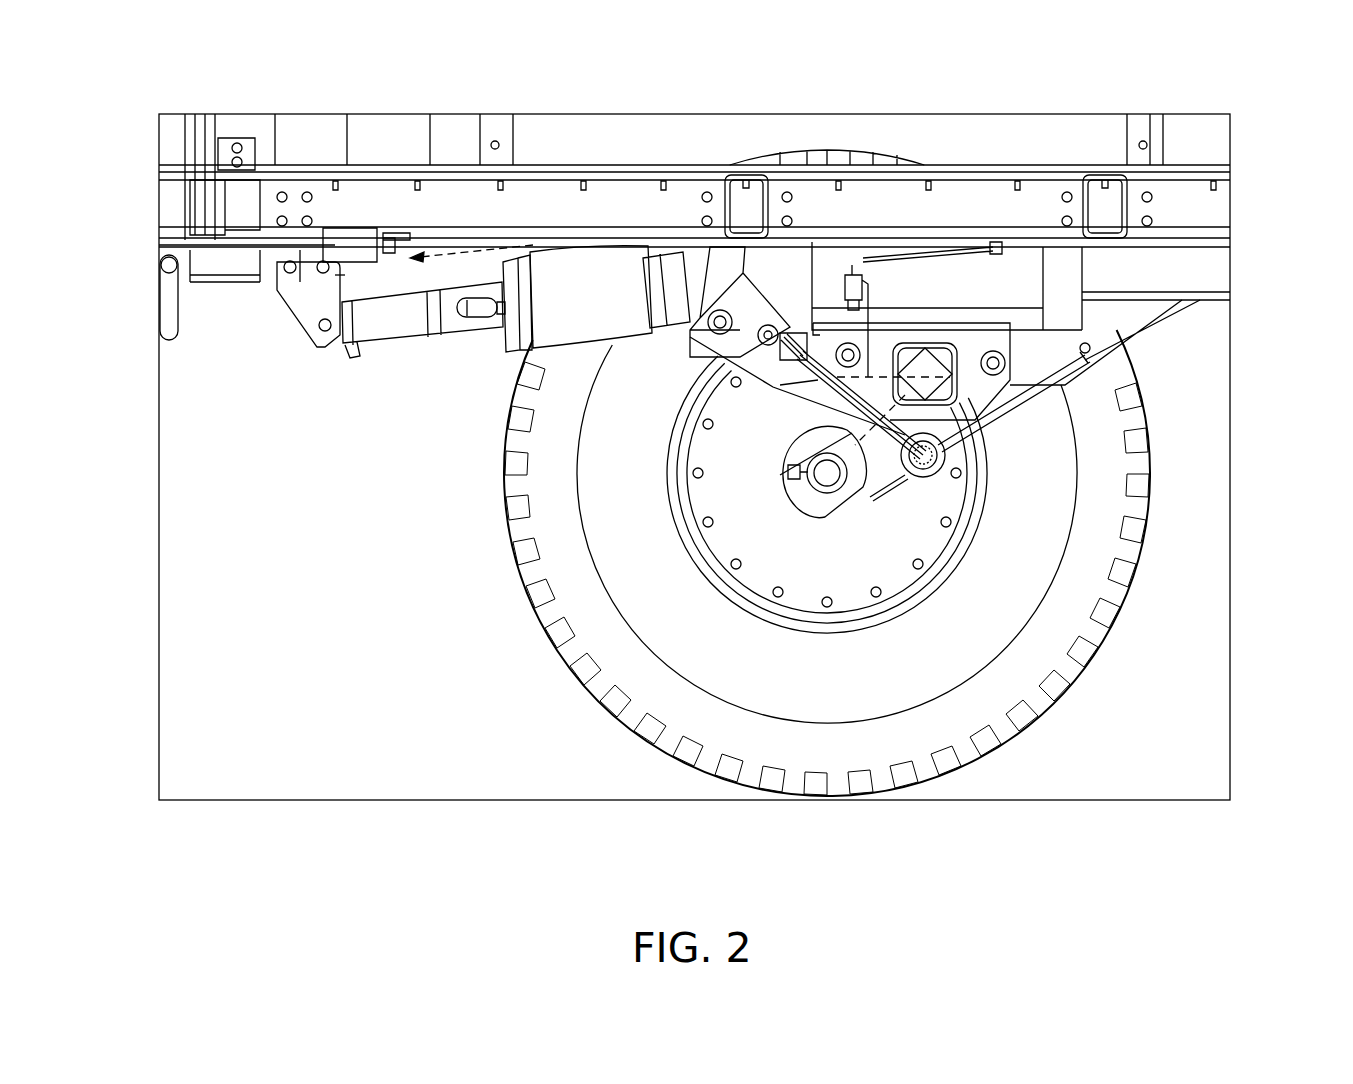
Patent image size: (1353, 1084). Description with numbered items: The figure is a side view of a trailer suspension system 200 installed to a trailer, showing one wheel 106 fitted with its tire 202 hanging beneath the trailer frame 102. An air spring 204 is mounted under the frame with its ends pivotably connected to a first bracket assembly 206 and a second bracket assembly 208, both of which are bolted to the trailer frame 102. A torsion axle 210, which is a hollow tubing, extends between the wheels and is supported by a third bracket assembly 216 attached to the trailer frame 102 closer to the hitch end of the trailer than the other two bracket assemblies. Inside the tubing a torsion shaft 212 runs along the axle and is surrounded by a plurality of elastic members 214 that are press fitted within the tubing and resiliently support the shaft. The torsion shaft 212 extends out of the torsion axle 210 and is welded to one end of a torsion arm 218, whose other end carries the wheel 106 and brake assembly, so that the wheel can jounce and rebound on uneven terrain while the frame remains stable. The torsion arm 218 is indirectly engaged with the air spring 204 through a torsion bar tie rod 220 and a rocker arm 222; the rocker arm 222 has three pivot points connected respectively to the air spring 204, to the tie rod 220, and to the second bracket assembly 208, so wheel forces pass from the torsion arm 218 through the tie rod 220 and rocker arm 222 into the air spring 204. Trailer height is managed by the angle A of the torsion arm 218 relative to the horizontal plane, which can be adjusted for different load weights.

The trailer suspension system 200 is at (168, 89).
The trailer frame 102 is at (1203, 212).
The wheel 106 is at (767, 530).
The tire 202 is at (585, 655).
The air spring 204 is at (517, 323).
The first bracket assembly 206 is at (302, 298).
The second bracket assembly 208 is at (740, 273).
The torsion axle 210 is at (1000, 385).
The torsion shaft 212 is at (1010, 392).
The elastic members 214 is at (910, 345).
The third bracket assembly 216 is at (853, 290).
The torsion arm 218 is at (830, 380).
The torsion bar tie rod 220 is at (1003, 382).
The rocker arm 222 is at (690, 355).
The angle of the torsion arm A is at (868, 500).